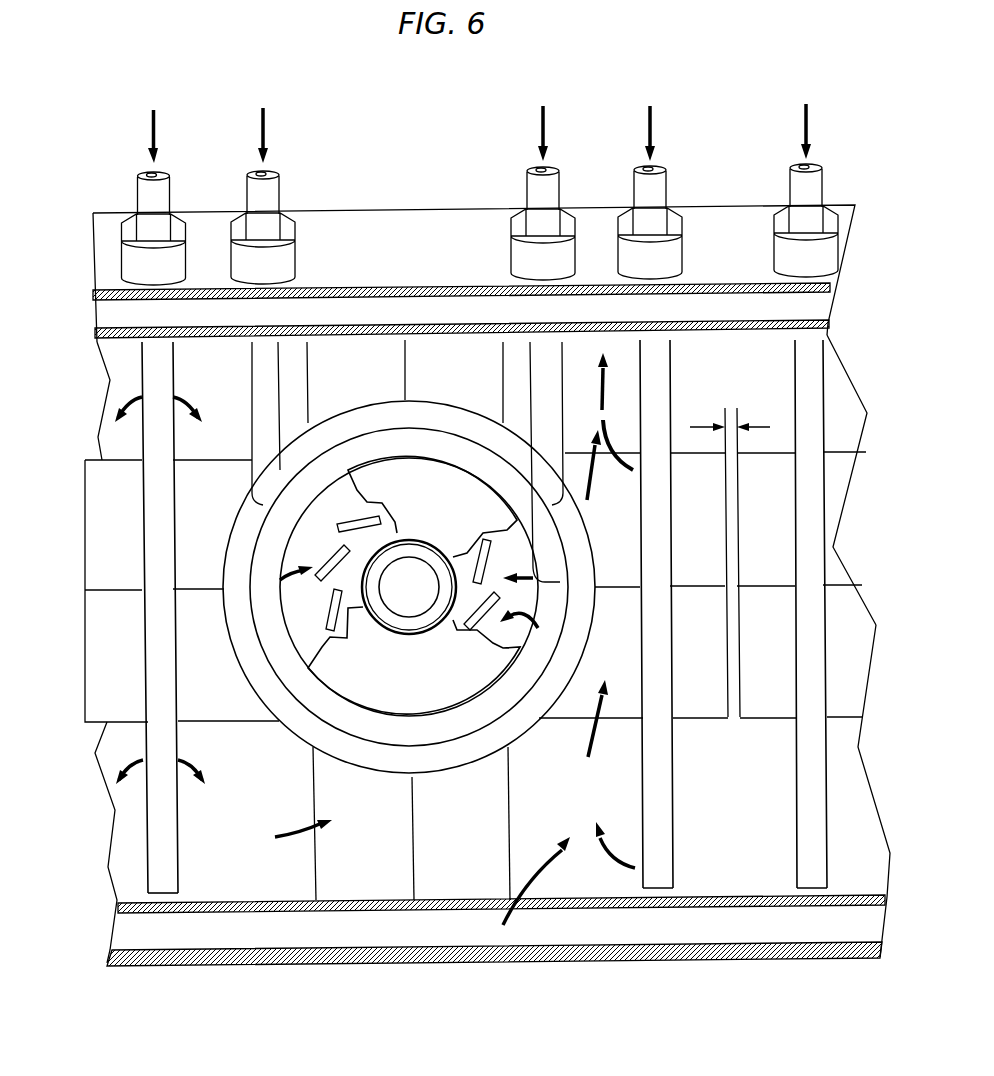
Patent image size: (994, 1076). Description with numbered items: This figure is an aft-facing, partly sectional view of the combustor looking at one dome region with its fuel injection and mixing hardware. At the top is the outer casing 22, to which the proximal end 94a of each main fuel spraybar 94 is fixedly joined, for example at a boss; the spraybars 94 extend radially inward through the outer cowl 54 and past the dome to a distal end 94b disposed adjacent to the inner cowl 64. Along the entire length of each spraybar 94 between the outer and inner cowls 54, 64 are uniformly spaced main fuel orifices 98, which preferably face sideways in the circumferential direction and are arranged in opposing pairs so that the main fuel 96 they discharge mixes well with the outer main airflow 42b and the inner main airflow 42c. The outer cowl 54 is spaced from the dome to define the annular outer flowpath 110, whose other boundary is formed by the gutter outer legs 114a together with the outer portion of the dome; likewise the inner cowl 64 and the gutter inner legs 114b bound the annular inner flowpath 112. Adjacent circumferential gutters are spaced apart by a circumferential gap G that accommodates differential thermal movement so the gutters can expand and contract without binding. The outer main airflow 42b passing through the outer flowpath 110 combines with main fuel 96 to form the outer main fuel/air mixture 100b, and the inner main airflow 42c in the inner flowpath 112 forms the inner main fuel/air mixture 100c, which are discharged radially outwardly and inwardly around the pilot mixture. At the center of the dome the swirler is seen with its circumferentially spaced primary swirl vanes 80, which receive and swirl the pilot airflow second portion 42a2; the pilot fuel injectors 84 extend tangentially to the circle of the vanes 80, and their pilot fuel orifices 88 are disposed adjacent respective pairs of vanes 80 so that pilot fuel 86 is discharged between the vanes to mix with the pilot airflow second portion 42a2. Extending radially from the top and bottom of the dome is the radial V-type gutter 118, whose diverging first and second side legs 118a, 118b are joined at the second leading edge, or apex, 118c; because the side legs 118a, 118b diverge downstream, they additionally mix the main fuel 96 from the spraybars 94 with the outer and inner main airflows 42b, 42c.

The outer casing 22 is at (375, 288).
The inner cowl 64 is at (295, 910).
The main fuel 96 is at (155, 133).
The pilot fuel 86 is at (265, 133).
The main fuel spraybar 94 is at (173, 380).
The proximal end 94a is at (165, 190).
The distal end 94b is at (187, 893).
The main fuel orifice 98 is at (142, 358).
The pilot fuel injector 84 is at (257, 417).
The outer cowl 54 is at (378, 337).
The outer main fuel/air mixture 100b is at (603, 380).
The inner main fuel/air mixture 100c is at (607, 702).
The outer flowpath 110 is at (782, 366).
The inner flowpath 112 is at (752, 832).
The circumferential gap G is at (757, 427).
The outer main airflow 42b is at (597, 468).
The inner main airflow 42c is at (563, 883).
The pilot airflow second portion 42a2 is at (520, 647).
The gutter outer leg 114a is at (113, 530).
The gutter inner leg 114b is at (113, 650).
The primary swirl vane 80 is at (363, 496).
The pilot fuel orifice 88 is at (533, 582).
The radial V-type gutter 118 is at (213, 842).
The first side leg 118a is at (348, 788).
The second side leg 118b is at (478, 785).
The second leading edge 118c is at (412, 818).